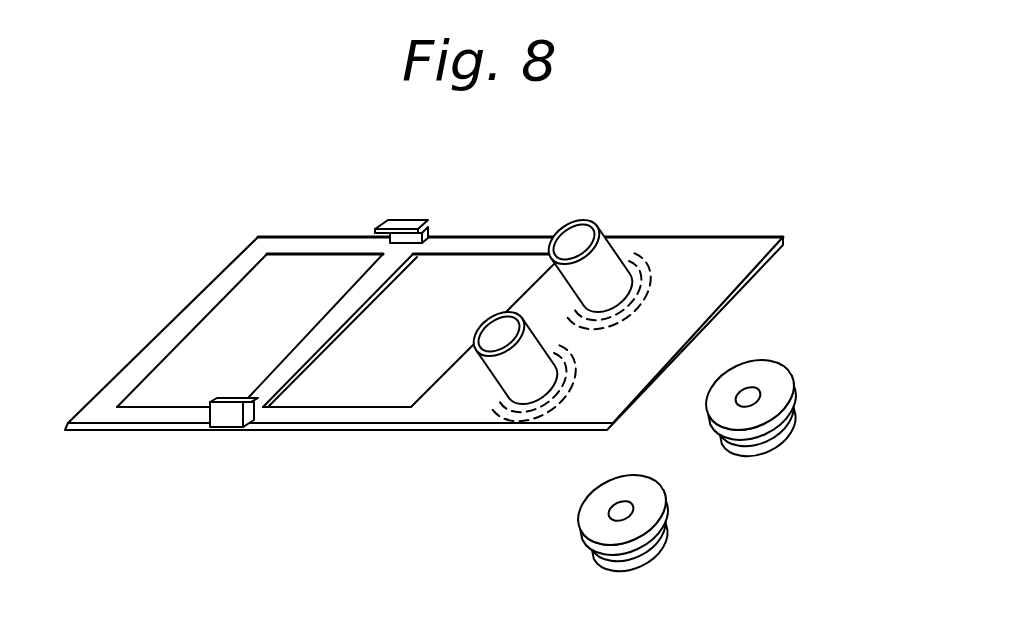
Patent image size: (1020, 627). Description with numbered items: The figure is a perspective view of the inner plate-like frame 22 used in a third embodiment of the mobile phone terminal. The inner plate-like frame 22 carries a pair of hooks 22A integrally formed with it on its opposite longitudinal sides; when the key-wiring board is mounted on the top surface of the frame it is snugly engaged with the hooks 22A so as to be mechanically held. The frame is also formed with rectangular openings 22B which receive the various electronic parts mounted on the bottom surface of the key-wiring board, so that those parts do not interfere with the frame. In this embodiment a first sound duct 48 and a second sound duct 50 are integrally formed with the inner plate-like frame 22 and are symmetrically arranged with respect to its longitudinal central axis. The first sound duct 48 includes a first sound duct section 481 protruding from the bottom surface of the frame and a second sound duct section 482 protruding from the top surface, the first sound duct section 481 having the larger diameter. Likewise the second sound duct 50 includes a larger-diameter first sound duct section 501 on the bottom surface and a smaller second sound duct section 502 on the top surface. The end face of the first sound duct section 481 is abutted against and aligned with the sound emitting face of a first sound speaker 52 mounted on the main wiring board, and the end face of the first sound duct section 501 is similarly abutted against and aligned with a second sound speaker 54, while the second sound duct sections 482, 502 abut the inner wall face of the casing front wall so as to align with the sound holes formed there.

The inner plate-like frame 22 is at (343, 452).
The hooks 22A is at (396, 220).
The rectangular openings 22B is at (220, 307).
The first sound duct 48 is at (533, 409).
The first sound duct section 481 is at (530, 420).
The second sound duct section 482 is at (530, 342).
The second sound duct 50 is at (661, 231).
The first sound duct section 501 is at (655, 270).
The second sound duct section 502 is at (586, 222).
The first sound speaker 52 is at (596, 555).
The second sound speaker 54 is at (772, 362).